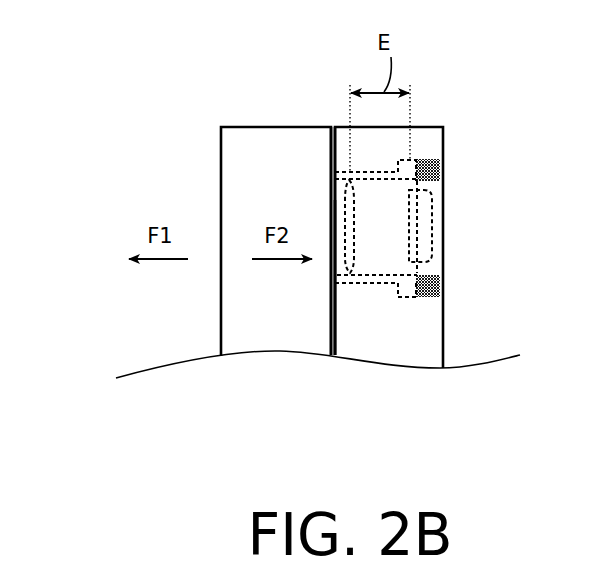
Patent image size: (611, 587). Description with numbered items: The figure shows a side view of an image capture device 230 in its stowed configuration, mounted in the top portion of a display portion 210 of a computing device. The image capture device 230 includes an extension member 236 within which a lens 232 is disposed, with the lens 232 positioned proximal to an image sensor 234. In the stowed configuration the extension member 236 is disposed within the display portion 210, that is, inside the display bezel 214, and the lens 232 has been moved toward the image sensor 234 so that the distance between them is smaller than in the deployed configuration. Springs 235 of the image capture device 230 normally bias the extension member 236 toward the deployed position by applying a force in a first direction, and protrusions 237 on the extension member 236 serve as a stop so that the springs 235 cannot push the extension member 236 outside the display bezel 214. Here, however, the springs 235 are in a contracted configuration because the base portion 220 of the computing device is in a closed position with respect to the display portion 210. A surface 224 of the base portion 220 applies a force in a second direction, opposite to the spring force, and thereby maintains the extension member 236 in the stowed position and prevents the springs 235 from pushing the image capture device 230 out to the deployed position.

The display portion 210 is at (427, 214).
The display bezel 214 is at (329, 141).
The base portion 220 is at (220, 163).
The surface 224 is at (330, 285).
The image capture device 230 is at (436, 141).
The lens 232 is at (344, 214).
The image sensor 234 is at (424, 212).
The springs 235 is at (444, 172).
The extension member 236 is at (380, 283).
The protrusions 237 is at (401, 171).